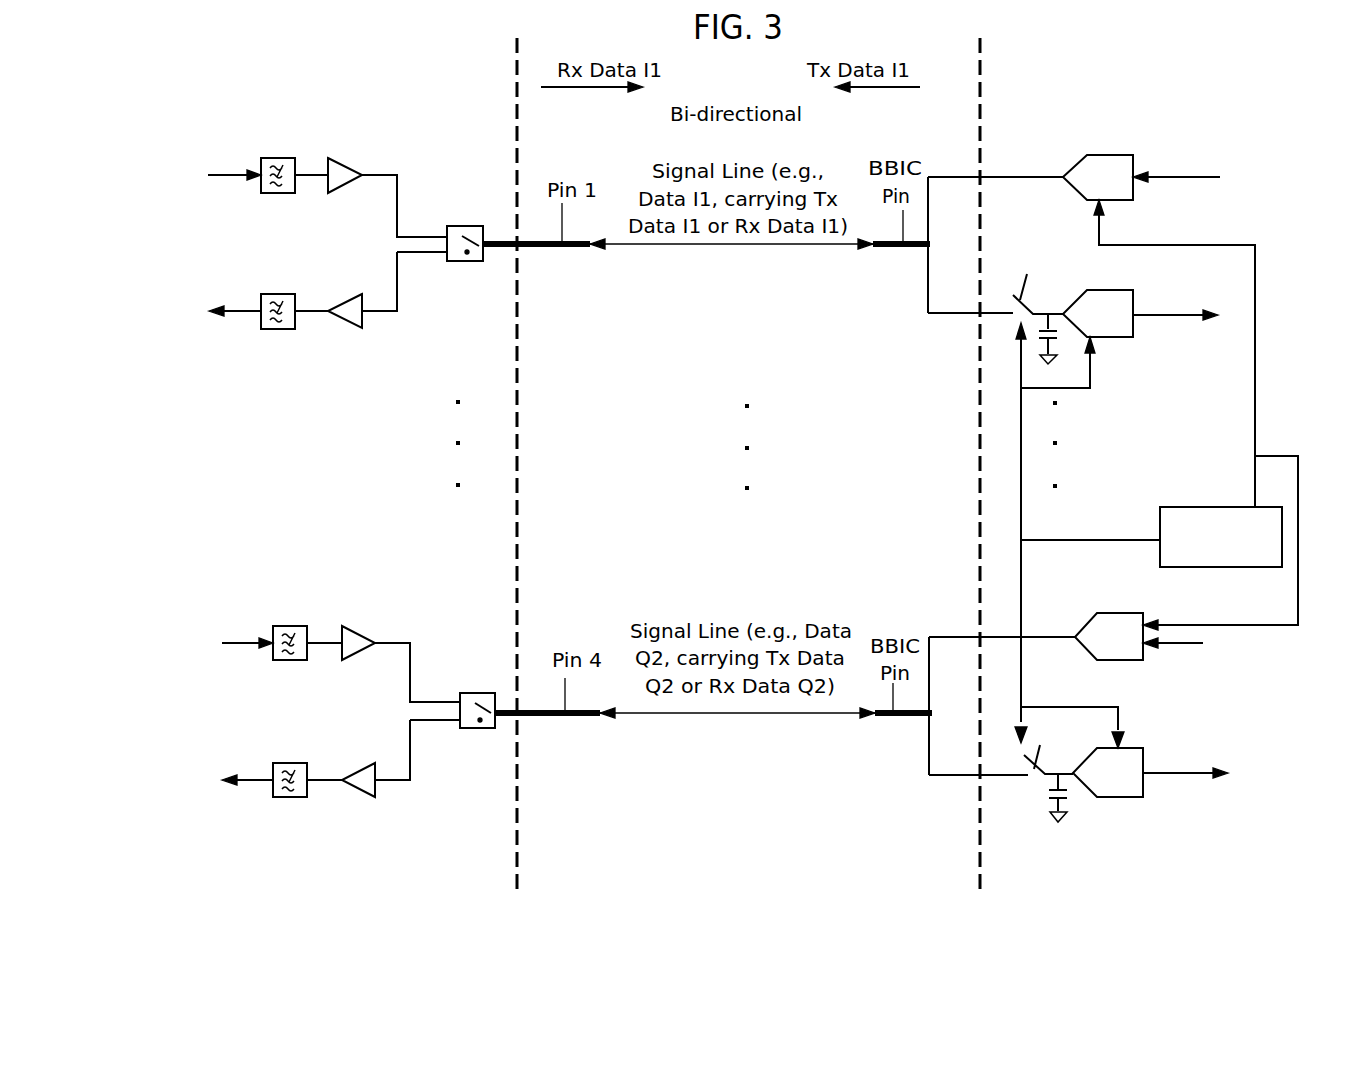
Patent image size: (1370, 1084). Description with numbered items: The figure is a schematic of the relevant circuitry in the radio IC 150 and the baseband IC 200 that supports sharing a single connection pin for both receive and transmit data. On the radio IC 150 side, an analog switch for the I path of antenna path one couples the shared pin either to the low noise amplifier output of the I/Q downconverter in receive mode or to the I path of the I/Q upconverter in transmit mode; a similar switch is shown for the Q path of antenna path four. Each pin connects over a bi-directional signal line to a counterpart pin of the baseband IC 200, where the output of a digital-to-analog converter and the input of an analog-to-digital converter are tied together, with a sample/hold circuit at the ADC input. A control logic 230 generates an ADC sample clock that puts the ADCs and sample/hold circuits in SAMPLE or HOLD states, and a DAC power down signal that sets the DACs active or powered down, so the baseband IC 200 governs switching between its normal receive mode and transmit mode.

The radio IC 150 is at (386, 479).
The baseband IC 200 is at (1101, 453).
The control logic 230 is at (1203, 507).